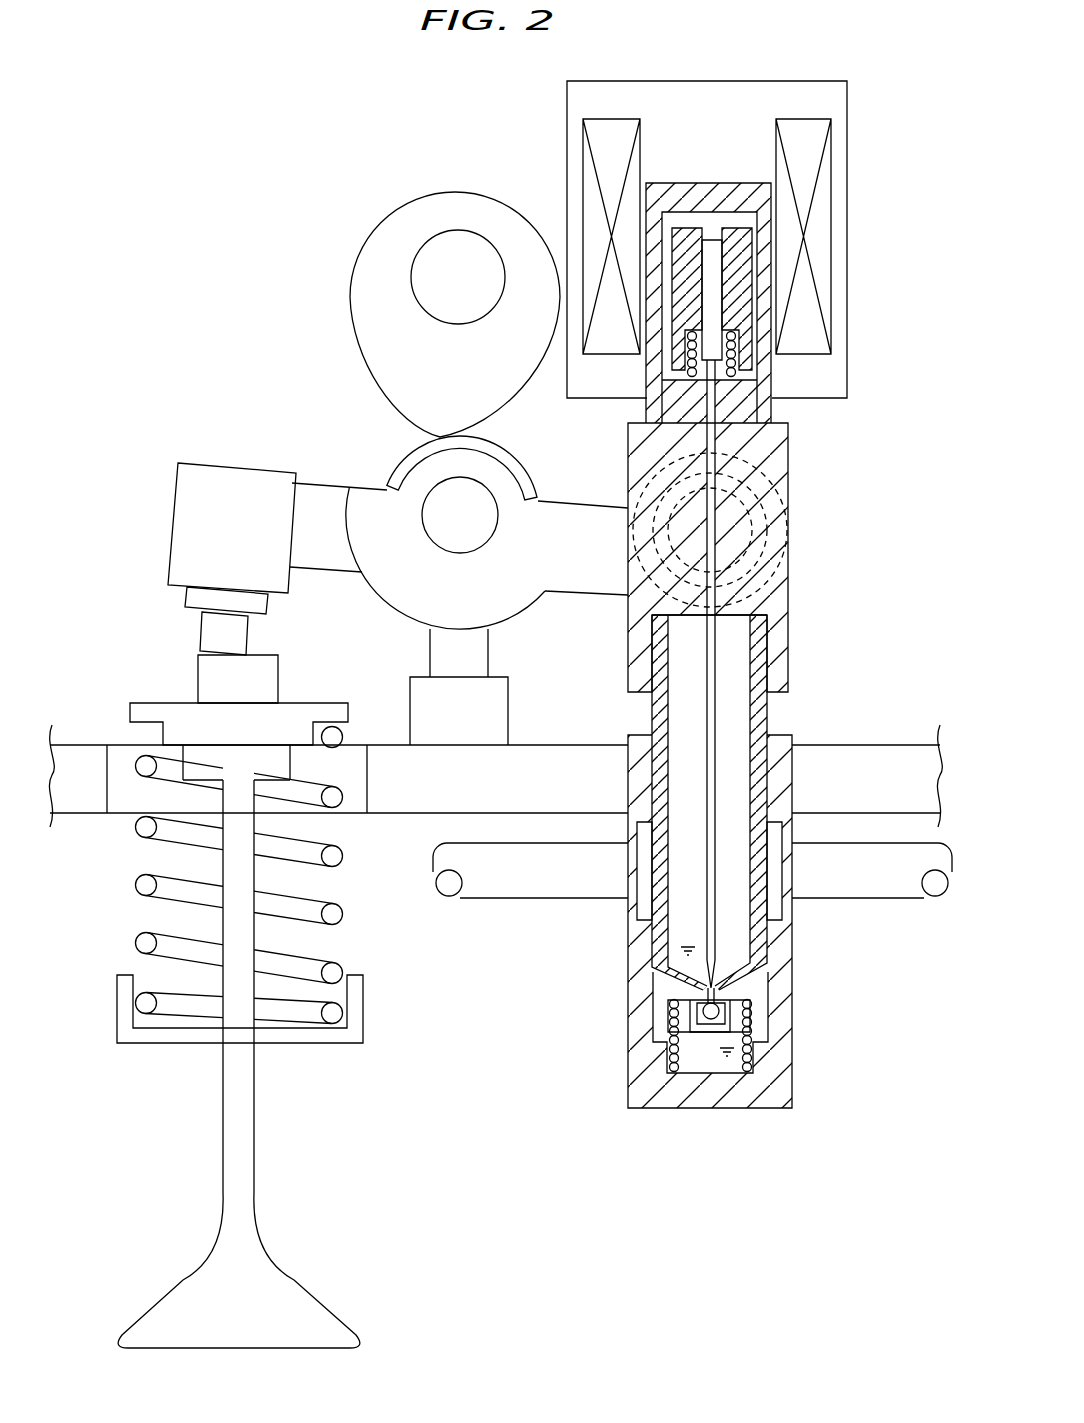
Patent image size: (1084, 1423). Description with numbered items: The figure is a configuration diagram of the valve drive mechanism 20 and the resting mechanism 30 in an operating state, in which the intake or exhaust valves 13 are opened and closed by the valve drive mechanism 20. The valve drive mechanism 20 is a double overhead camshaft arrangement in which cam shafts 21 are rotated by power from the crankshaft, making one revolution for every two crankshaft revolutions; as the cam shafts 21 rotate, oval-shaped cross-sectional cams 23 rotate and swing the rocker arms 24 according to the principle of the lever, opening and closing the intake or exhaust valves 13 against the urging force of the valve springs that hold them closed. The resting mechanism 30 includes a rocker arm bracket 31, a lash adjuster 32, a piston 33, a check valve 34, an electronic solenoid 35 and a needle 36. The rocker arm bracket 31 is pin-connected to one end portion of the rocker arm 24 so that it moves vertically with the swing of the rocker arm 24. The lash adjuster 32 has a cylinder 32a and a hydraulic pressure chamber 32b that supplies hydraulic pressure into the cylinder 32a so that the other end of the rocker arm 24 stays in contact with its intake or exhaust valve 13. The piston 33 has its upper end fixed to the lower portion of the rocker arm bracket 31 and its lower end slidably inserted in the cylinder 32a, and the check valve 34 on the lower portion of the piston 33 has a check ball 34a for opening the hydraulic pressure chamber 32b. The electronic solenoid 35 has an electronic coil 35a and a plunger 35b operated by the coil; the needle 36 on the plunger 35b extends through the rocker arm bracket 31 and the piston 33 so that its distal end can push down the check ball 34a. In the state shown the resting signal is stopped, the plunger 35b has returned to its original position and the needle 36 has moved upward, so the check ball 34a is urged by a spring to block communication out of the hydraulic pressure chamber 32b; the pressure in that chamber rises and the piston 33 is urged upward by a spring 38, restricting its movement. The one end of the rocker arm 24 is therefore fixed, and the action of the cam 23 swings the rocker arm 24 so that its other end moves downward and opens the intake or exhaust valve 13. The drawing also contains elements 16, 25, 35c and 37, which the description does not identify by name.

The intake or exhaust valve 13 is at (220, 1175).
The cylinder head 16 is at (78, 742).
The valve drive mechanism 20 is at (401, 285).
The cam shaft 21 is at (411, 259).
The cam 23 is at (348, 288).
The rocker arm 24 is at (275, 464).
The valve spring 25 is at (135, 883).
The resting mechanism 30 is at (753, 632).
The rocker arm bracket 31 is at (790, 471).
The lash adjuster 32 is at (700, 959).
The cylinder 32a is at (635, 915).
The hydraulic pressure chamber 32b is at (712, 1062).
The piston 33 is at (770, 716).
The check valve 34 is at (668, 1030).
The check ball 34a is at (668, 1012).
The electronic solenoid 35 is at (764, 252).
The electronic coil 35a is at (832, 233).
The plunger 35b is at (752, 290).
The return spring 35c is at (738, 362).
The needle 36 is at (716, 433).
The rail 37 is at (483, 900).
The spring 38 is at (760, 1040).